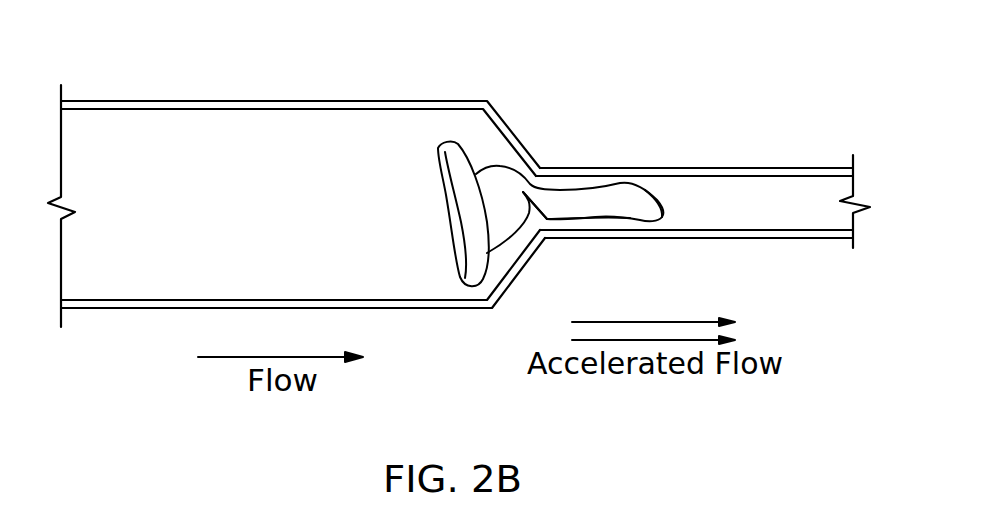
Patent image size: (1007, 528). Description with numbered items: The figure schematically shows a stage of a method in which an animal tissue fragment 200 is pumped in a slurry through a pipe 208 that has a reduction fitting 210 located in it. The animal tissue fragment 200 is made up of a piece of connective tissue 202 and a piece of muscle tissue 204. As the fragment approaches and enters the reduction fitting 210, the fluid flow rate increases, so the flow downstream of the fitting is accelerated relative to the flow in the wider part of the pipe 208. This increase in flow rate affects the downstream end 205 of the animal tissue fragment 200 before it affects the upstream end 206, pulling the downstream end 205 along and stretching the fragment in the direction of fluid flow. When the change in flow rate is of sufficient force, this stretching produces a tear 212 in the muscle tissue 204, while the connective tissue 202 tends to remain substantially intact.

The animal tissue fragment 200 is at (399, 232).
The connective tissue 202 is at (468, 242).
The muscle tissue 204 is at (621, 211).
The downstream end 205 is at (665, 212).
The upstream end 206 is at (438, 152).
The pipe 208 is at (277, 100).
The reduction fitting 210 is at (593, 166).
The tear 212 is at (540, 215).